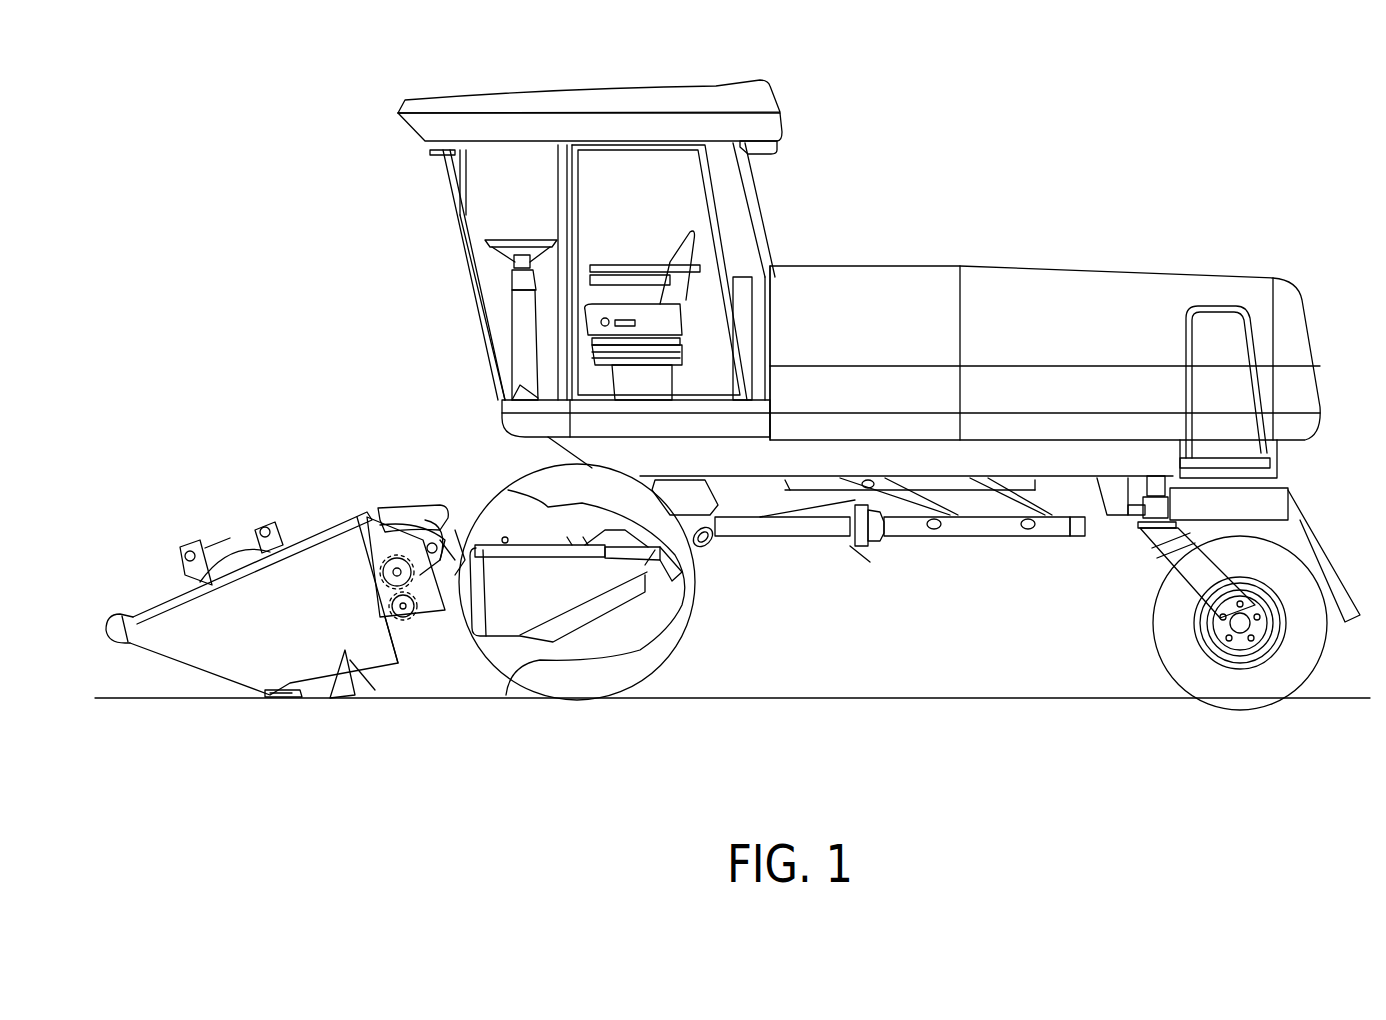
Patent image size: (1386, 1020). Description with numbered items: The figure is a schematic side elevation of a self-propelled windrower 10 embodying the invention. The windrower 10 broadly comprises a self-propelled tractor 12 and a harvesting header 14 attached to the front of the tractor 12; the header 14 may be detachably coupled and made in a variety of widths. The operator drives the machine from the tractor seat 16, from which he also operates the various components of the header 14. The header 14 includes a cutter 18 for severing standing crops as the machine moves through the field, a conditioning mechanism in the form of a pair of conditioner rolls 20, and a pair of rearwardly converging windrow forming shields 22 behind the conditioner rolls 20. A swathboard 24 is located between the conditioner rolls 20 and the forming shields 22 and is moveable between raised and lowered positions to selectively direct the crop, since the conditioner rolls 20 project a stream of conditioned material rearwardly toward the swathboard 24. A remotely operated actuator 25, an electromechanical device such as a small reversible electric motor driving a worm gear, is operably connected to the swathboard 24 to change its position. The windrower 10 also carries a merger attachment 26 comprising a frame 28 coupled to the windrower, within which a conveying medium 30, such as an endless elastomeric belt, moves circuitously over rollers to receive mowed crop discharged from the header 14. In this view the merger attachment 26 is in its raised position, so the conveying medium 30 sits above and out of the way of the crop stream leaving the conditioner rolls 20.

The windrower 10 is at (962, 240).
The self-propelled tractor 12 is at (1112, 288).
The harvesting header 14 is at (310, 525).
The tractor seat 16 is at (670, 318).
The cutter 18 is at (275, 700).
The conditioner rolls 20 is at (388, 605).
The windrow forming shields 22 is at (510, 612).
The swathboard 24 is at (458, 545).
The remotely operated actuator 25 is at (402, 518).
The merger attachment 26 is at (916, 537).
The frame 28 is at (1065, 510).
The conveying medium 30 is at (975, 505).